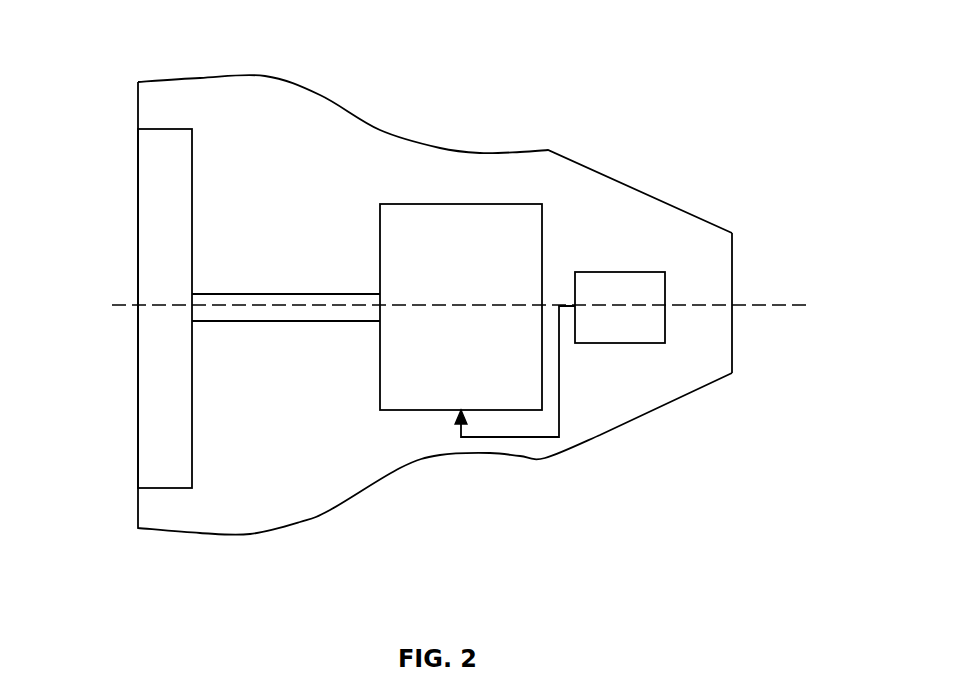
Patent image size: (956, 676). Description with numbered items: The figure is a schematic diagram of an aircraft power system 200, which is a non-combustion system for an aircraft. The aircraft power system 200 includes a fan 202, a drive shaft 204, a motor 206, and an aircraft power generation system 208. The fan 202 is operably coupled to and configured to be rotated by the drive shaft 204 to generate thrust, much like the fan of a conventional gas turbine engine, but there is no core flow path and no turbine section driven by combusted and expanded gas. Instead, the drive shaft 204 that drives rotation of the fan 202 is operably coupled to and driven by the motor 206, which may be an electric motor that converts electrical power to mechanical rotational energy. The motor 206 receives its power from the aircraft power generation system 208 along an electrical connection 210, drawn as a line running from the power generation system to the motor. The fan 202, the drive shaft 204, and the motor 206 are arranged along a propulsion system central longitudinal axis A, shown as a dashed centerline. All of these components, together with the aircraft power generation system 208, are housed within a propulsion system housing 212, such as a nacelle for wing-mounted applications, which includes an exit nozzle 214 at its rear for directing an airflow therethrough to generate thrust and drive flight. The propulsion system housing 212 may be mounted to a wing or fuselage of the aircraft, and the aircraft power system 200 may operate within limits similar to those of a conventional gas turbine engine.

The aircraft power system 200 is at (765, 70).
The fan 202 is at (166, 129).
The drive shaft 204 is at (286, 294).
The motor 206 is at (520, 204).
The aircraft power generation system 208 is at (650, 272).
The electrical connection 210 is at (559, 373).
The propulsion system housing 212 is at (268, 78).
The exit nozzle 214 is at (732, 353).
The propulsion system central longitudinal axis A is at (760, 305).